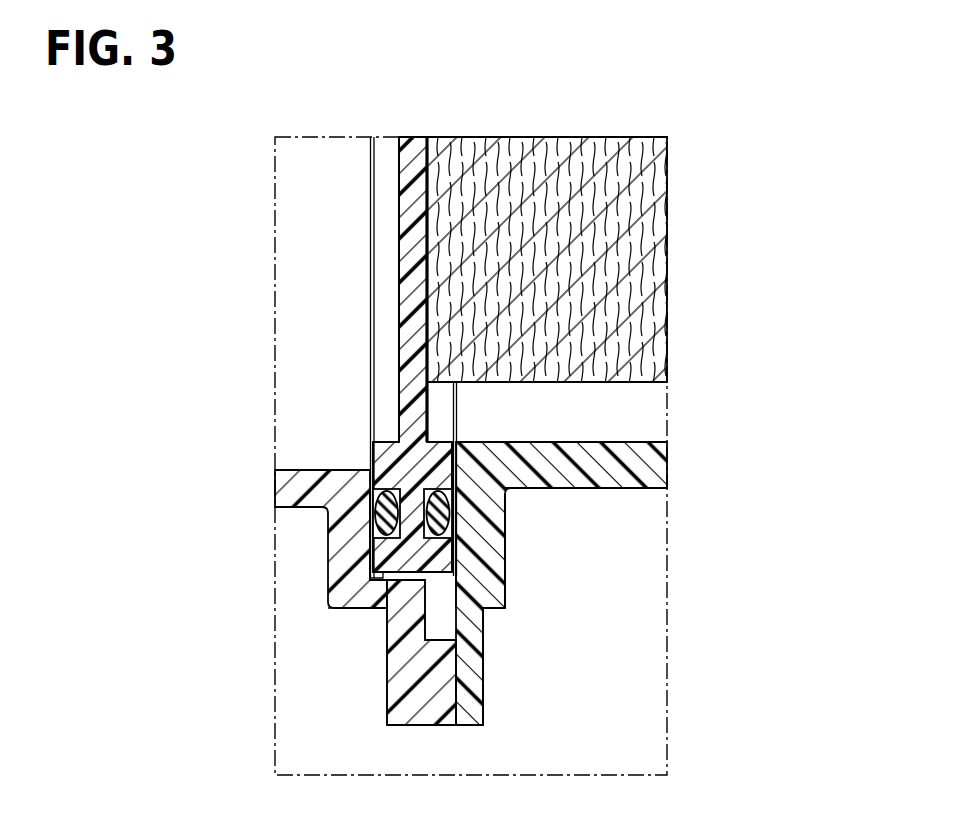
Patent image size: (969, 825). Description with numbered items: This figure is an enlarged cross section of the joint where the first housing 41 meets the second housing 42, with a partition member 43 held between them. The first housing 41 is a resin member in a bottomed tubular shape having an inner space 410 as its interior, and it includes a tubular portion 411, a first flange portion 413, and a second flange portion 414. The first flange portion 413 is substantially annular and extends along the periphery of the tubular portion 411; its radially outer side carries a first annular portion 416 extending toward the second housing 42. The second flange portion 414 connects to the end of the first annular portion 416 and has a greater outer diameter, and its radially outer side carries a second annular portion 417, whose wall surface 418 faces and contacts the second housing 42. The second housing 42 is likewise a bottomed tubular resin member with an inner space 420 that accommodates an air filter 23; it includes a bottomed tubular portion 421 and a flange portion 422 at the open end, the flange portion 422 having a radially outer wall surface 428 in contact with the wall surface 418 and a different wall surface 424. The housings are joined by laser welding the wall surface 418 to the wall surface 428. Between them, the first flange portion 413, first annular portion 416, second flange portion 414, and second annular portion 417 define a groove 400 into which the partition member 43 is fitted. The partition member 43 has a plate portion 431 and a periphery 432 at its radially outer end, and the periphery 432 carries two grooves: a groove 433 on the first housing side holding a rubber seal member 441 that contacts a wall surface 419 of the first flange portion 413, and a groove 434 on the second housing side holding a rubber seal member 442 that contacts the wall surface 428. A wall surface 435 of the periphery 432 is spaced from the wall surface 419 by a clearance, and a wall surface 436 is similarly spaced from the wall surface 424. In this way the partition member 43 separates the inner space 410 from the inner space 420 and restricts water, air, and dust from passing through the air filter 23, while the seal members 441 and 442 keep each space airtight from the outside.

The air filter 23 is at (645, 200).
The first housing 41 is at (344, 465).
The second housing 42 is at (652, 436).
The partition member 43 is at (396, 147).
The groove 400 is at (380, 598).
The inner space 410 is at (296, 346).
The tubular portion 411 is at (300, 480).
The first flange portion 413 is at (348, 589).
The second flange portion 414 is at (383, 640).
The first annular portion 416 is at (372, 606).
The second annular portion 417 is at (433, 684).
The wall surface 418 is at (464, 727).
The wall surface 419 is at (354, 573).
The inner space 420 is at (626, 425).
The bottomed tubular portion 421 is at (650, 466).
The flange portion 422 is at (503, 590).
The wall surface 424 is at (474, 570).
The wall surface 428 is at (452, 668).
The plate portion 431 is at (415, 248).
The periphery 432 is at (372, 446).
The groove 433 is at (366, 504).
The groove 434 is at (478, 505).
The wall surface 435 is at (362, 548).
The wall surface 436 is at (468, 540).
The seal member 441 is at (376, 516).
The seal member 442 is at (455, 520).